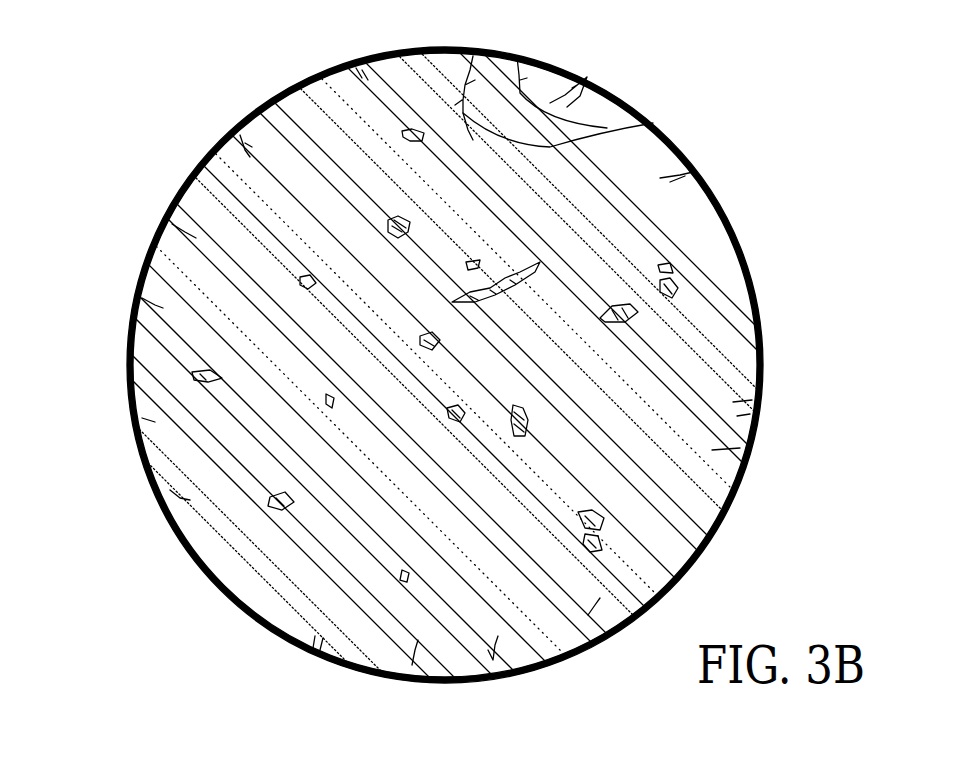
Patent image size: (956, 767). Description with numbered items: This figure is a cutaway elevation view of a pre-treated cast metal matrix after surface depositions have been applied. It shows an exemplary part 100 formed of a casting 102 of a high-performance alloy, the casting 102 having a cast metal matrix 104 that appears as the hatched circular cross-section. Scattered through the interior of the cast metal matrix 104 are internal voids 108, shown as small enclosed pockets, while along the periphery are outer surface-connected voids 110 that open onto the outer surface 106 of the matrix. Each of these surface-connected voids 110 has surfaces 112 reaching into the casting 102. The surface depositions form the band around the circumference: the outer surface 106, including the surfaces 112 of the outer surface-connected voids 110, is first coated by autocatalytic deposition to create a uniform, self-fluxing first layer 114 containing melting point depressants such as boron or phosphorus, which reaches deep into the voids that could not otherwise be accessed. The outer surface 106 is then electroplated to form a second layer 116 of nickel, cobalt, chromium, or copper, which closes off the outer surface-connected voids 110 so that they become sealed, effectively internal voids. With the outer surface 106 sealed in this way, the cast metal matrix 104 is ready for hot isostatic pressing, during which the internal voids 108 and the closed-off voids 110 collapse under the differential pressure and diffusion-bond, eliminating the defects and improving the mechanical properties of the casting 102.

The part 100 is at (147, 145).
The casting 102 is at (665, 96).
The cast metal matrix 104 is at (695, 243).
The outer surface 106 is at (704, 183).
The internal voids 108 is at (620, 314).
The outer surface-connected voids 110 is at (480, 44).
The surfaces of the outer surface-connected voids 112 is at (653, 123).
The first layer 114 is at (250, 115).
The second layer 116 is at (296, 87).